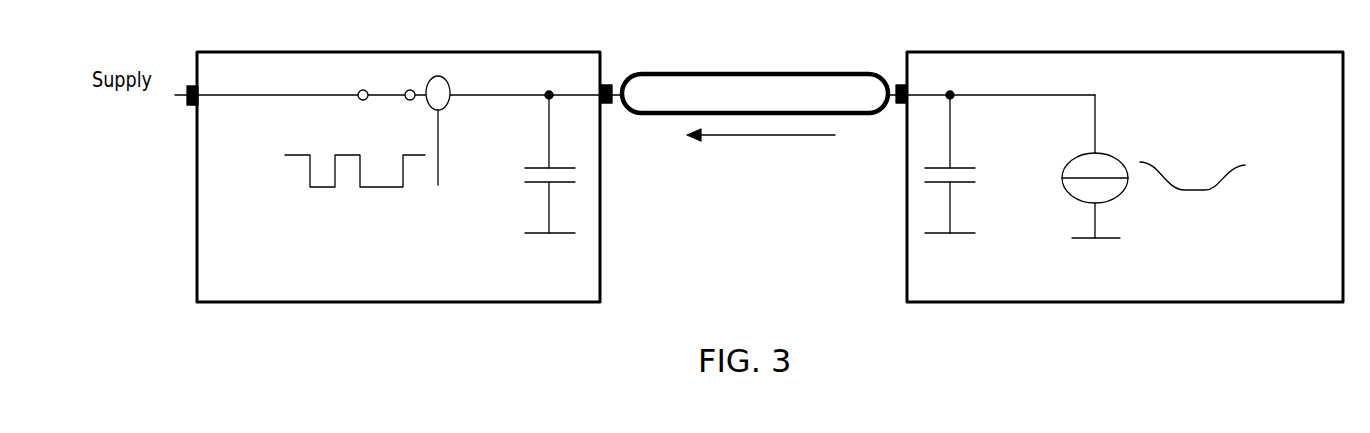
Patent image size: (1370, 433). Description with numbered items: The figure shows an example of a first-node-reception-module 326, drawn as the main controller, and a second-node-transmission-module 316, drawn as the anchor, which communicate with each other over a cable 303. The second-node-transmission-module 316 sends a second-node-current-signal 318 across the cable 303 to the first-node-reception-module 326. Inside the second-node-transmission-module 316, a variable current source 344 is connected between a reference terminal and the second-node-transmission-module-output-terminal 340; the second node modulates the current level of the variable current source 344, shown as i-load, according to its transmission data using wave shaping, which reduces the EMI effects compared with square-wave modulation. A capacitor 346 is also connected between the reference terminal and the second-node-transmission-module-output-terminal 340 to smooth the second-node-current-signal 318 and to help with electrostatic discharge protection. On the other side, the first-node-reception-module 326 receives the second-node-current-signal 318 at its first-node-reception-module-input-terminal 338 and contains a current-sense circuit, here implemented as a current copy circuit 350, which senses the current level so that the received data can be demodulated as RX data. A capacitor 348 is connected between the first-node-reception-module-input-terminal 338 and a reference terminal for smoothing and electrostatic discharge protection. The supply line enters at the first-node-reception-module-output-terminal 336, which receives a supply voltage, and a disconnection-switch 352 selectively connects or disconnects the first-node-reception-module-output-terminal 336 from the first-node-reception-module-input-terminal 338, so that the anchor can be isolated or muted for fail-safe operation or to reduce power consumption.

The cable 303 is at (787, 75).
The second-node-transmission-module 316 is at (1220, 51).
The second-node-current-signal 318 is at (737, 170).
The first-node-reception-module 326 is at (570, 26).
The first-node-reception-module-output-terminal 336 is at (187, 96).
The first-node-reception-module-input-terminal 338 is at (611, 86).
The second-node-transmission-module-output-terminal 340 is at (897, 88).
The variable current source 344 is at (1073, 197).
The capacitor 346 is at (935, 183).
The capacitor 348 is at (563, 183).
The current copy circuit 350 is at (447, 110).
The disconnection-switch 352 is at (383, 102).